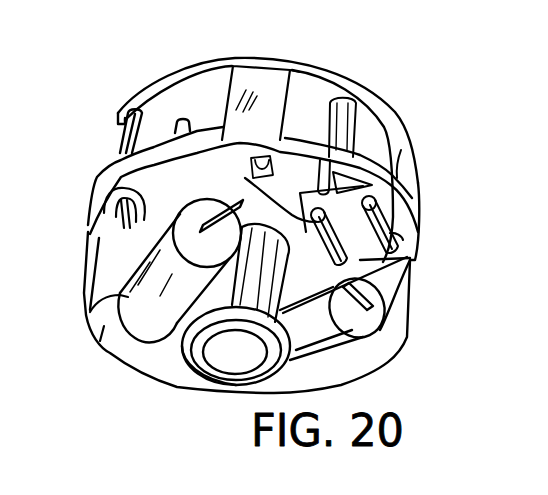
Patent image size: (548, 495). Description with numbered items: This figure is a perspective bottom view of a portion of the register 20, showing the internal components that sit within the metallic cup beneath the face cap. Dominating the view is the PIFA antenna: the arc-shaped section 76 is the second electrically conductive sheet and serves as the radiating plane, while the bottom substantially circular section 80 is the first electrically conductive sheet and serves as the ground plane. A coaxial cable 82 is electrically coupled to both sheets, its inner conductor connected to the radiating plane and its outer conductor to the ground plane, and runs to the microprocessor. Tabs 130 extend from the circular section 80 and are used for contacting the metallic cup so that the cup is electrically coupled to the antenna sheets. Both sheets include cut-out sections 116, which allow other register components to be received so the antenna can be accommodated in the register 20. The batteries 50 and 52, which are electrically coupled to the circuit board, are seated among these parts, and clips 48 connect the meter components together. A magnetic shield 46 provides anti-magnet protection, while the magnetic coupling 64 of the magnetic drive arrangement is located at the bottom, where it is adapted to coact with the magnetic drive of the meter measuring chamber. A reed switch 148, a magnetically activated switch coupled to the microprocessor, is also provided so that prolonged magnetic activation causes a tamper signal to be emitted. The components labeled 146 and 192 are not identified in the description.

The register 20 is at (410, 332).
The magnetic shield 46 is at (157, 377).
The clips 48 is at (88, 227).
The battery 50 is at (92, 322).
The battery 52 is at (410, 302).
The magnetic coupling 64 is at (227, 362).
The arc-shaped section 76 is at (202, 88).
The circular section 80 is at (294, 163).
The coaxial cable 82 is at (391, 177).
The cut-out sections 116 is at (404, 238).
The tabs 130 is at (351, 158).
The cylinder 146 is at (246, 178).
The reed switch 148 is at (390, 220).
The hook 192 is at (401, 150).